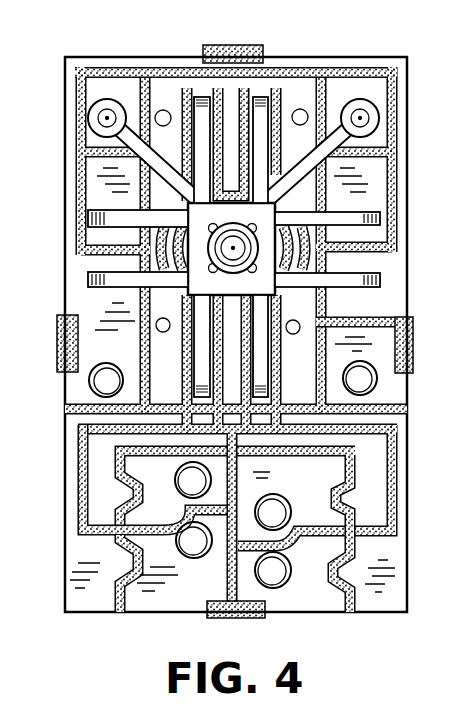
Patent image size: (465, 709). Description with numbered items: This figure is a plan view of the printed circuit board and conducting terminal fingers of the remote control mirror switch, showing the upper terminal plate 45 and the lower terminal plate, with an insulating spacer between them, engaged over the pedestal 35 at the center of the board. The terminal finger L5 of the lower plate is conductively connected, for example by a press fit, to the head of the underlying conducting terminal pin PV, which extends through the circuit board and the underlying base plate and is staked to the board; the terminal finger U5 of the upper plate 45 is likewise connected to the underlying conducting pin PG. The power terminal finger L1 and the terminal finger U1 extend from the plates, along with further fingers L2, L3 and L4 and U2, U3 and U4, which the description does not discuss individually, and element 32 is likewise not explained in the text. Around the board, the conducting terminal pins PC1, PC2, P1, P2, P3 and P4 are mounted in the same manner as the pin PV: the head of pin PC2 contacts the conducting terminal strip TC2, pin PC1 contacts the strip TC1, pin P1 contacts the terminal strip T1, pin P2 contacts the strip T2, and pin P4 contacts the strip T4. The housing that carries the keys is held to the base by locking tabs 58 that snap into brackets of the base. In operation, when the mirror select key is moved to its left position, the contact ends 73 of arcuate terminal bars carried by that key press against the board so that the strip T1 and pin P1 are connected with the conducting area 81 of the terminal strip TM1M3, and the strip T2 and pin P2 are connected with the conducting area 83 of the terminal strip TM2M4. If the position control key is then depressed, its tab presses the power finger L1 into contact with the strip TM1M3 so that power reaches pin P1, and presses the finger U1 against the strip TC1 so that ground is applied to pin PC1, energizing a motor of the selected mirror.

The conducting terminal pin PV is at (107, 99).
The conducting pin PG is at (372, 109).
The power terminal finger L1 is at (200, 99).
The line L2 is at (376, 280).
The line L3 is at (262, 345).
The line L4 is at (95, 218).
The terminal finger L5 is at (147, 167).
The terminal finger U1 is at (261, 99).
The passage U2 is at (376, 220).
The passage U3 is at (200, 362).
The passage U4 is at (92, 279).
The terminal finger U5 is at (323, 163).
The conducting terminal strip TM2M4 is at (297, 88).
The conducting terminal strip TM1M3 is at (237, 472).
The port 32 is at (307, 112).
The pedestal 35 is at (232, 223).
The upper plate 45 is at (282, 264).
The locking tabs 58 is at (413, 355).
The conducting terminal strip TC1 is at (368, 349).
The conducting terminal strip TC2 is at (100, 311).
The conducting terminal pin PC1 is at (362, 379).
The conducting terminal pin PC2 is at (105, 380).
The conducting terminal pin P1 is at (274, 512).
The conducting terminal pin P2 is at (273, 572).
The conducting terminal pin P3 is at (193, 480).
The conducting terminal pin P4 is at (192, 548).
The terminal strip T1 is at (312, 514).
The terminal strip T2 is at (313, 600).
The terminal strip T4 is at (157, 578).
The contact ends 73 is at (130, 516).
The conducting area 81 is at (93, 480).
The conducting area 83 is at (93, 575).